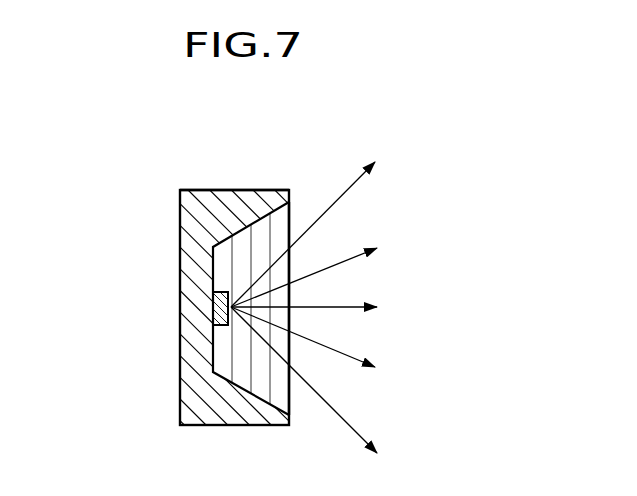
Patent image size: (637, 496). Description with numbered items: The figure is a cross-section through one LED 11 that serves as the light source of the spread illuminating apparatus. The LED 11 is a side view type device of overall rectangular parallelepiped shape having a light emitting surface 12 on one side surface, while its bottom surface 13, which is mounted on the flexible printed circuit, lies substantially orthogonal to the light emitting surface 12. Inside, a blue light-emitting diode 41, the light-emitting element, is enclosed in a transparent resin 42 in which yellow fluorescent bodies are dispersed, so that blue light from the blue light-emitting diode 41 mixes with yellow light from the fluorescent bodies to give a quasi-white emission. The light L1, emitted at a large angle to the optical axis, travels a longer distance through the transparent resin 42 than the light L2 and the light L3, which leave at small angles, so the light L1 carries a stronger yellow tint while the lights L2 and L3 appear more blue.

The LED 11 is at (195, 217).
The light emitting surface 12 is at (292, 352).
The bottom surface 13 is at (228, 187).
The blue light-emitting diode 41 is at (218, 306).
The transparent resin 42 is at (278, 383).
The light L1 is at (322, 213).
The light L2 is at (340, 258).
The light L3 is at (345, 298).